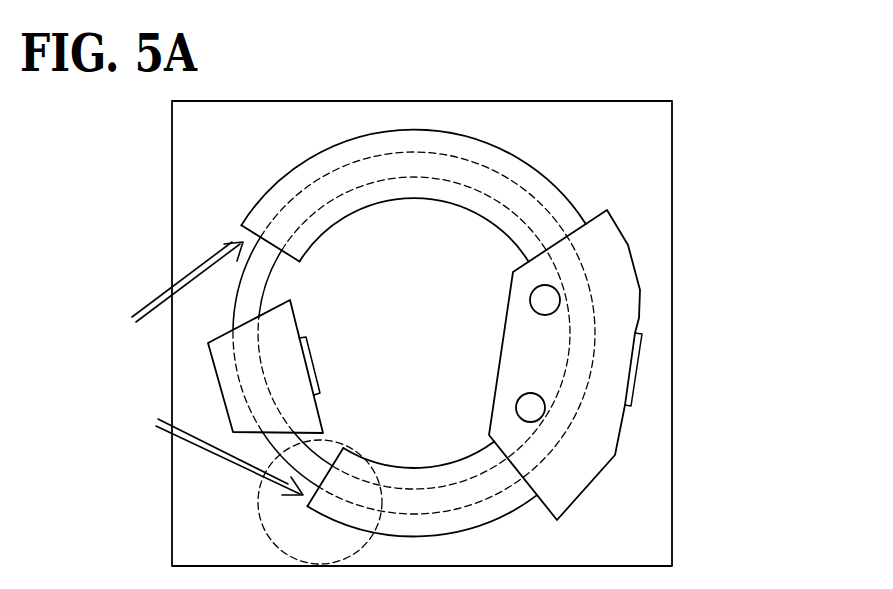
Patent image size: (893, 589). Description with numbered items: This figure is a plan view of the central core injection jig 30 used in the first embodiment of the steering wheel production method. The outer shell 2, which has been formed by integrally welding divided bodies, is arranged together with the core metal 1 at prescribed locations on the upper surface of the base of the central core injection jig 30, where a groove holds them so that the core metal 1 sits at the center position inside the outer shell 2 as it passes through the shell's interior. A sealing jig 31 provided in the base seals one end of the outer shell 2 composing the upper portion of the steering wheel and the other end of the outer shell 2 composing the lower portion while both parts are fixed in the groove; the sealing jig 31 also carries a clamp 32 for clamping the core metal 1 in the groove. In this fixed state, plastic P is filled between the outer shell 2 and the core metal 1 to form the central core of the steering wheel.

The core metal 1 is at (243, 281).
The outer shell 2 is at (545, 190).
The central core injection jig 30 is at (184, 209).
The sealing jig 31 is at (610, 263).
The clamp 32 is at (233, 412).
The plastic P is at (206, 368).